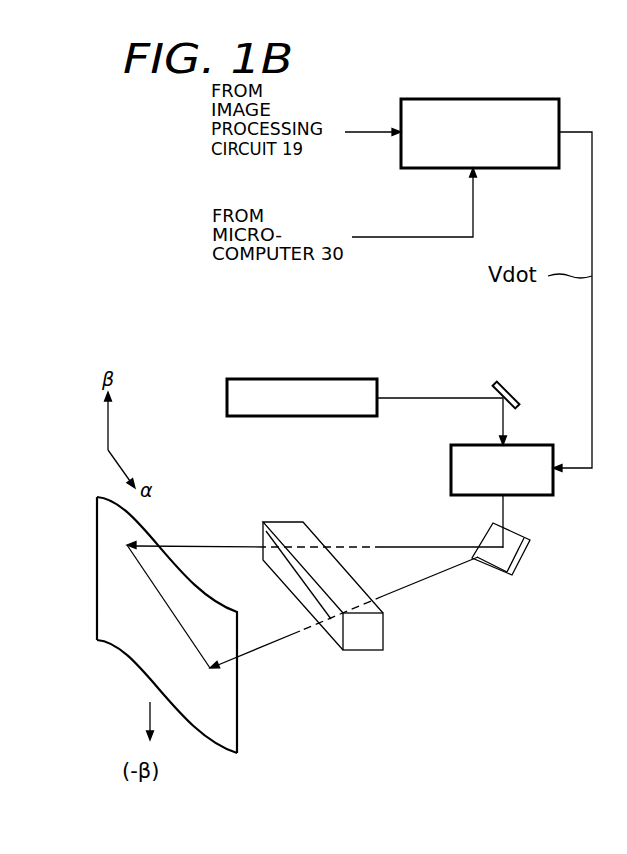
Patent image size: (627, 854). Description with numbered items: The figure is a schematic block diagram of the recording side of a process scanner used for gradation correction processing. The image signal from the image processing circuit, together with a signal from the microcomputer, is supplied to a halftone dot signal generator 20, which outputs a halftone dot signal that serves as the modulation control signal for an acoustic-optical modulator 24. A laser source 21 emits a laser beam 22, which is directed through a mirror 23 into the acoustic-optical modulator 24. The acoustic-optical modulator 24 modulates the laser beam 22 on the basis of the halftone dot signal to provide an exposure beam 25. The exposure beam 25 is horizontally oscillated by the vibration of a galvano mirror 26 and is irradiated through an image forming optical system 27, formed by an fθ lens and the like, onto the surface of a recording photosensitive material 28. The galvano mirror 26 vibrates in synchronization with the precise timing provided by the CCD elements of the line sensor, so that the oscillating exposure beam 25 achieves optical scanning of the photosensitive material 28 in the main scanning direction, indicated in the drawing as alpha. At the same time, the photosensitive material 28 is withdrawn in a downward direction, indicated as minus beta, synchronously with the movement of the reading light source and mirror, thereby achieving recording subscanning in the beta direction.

The halftone dot signal generator 20 is at (499, 99).
The laser source 21 is at (328, 379).
The laser beam 22 is at (406, 397).
The mirror 23 is at (500, 384).
The acoustic-optical modulator 24 is at (513, 445).
The exposure beam 25 is at (505, 510).
The galvano mirror 26 is at (520, 563).
The image forming optical system 27 is at (279, 522).
The recording photosensitive material 28 is at (237, 708).